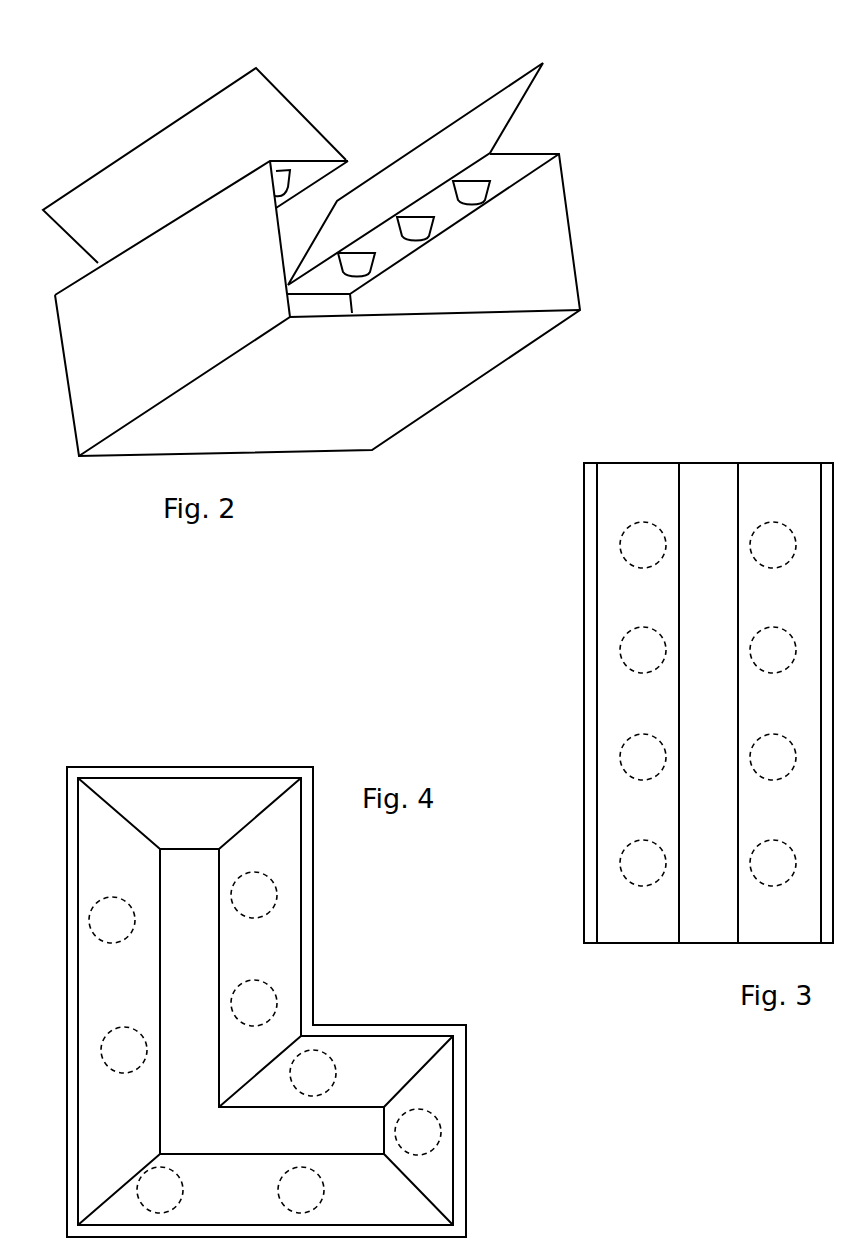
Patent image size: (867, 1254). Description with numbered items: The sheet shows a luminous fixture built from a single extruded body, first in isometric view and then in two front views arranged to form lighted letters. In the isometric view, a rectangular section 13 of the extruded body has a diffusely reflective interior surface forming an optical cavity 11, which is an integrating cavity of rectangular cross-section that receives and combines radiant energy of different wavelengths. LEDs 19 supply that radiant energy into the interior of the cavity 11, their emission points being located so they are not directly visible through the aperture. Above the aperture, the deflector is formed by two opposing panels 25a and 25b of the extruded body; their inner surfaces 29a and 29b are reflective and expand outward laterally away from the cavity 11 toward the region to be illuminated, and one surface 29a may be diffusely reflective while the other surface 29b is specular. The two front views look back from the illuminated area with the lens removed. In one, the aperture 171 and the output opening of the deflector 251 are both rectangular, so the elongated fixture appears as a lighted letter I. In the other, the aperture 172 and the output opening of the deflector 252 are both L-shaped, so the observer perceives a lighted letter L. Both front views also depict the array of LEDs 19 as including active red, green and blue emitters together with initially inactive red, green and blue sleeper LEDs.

In FIG. 2, the optical cavity 11 is at (408, 296).
In FIG. 2, the rectangular section 13 is at (577, 260).
In FIG. 2, the LEDs 19 is at (480, 186).
In FIG. 2, the panel 25a is at (223, 165).
In FIG. 2, the inner surface 29a is at (317, 120).
In FIG. 2, the panel 25b is at (463, 161).
In FIG. 2, the inner surface 29b is at (492, 120).
In FIG. 3, the deflector 251 is at (673, 703).
In FIG. 3, the aperture 171 is at (708, 703).
In FIG. 4, the deflector 252 is at (266, 1002).
In FIG. 4, the aperture 172 is at (372, 977).